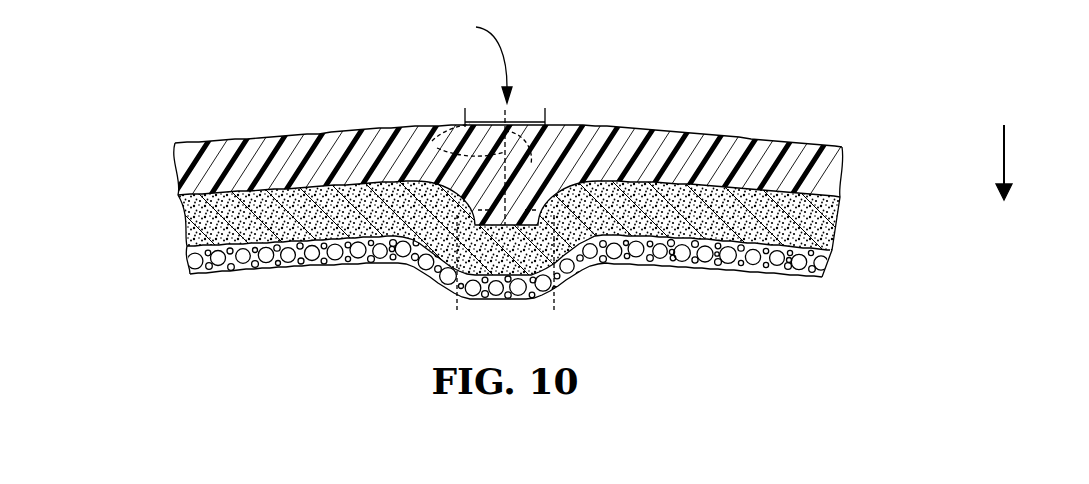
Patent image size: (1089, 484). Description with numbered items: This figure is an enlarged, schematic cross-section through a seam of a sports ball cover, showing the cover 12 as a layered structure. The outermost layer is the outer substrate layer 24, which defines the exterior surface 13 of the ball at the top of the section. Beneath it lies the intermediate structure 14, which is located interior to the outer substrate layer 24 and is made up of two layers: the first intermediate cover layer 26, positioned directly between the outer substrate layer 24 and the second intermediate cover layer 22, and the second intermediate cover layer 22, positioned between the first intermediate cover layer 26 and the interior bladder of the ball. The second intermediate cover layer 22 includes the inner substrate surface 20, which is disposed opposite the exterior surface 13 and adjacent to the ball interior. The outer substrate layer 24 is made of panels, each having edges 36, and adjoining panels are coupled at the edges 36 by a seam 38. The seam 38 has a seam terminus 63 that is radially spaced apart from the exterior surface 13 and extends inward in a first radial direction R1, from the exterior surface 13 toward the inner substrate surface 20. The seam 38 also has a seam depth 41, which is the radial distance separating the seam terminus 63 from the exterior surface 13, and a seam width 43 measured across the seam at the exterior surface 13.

The cover 12 is at (910, 293).
The exterior surface 13 is at (277, 125).
The intermediate structure 14 is at (857, 200).
The inner substrate surface 20 is at (724, 287).
The second intermediate cover layer 22 is at (830, 272).
The outer substrate layer 24 is at (843, 170).
The first intermediate cover layer 26 is at (837, 200).
The edges 36 is at (506, 275).
The seam 38 is at (480, 60).
The seam depth 41 is at (514, 164).
The seam width 43 is at (523, 122).
The seam terminus 63 is at (433, 126).
The first radial direction R1 is at (1007, 158).